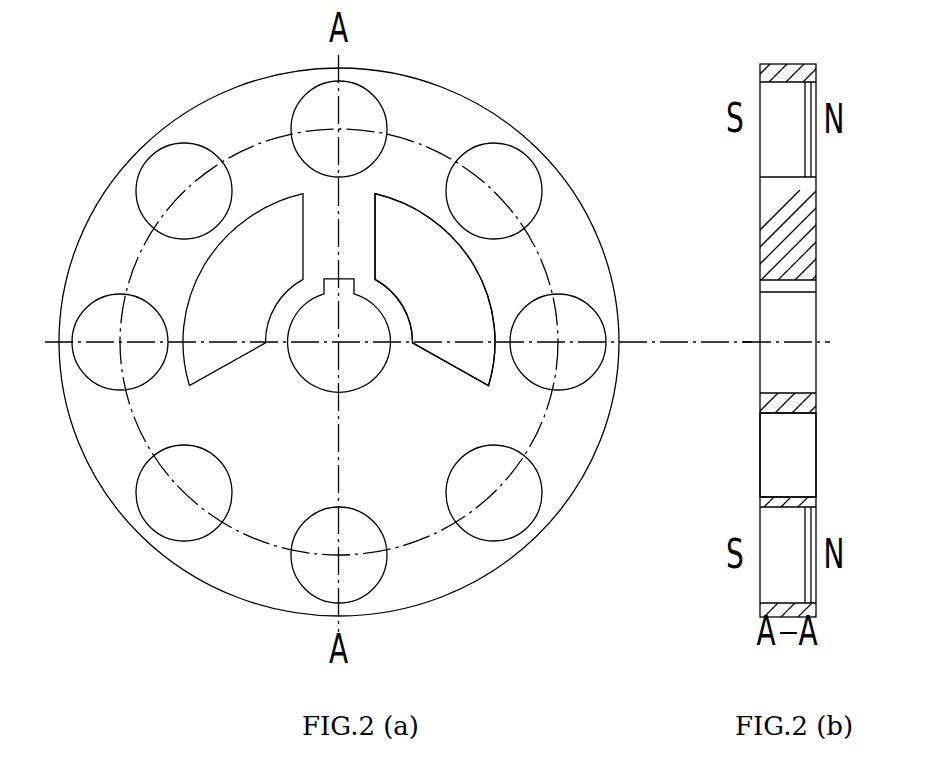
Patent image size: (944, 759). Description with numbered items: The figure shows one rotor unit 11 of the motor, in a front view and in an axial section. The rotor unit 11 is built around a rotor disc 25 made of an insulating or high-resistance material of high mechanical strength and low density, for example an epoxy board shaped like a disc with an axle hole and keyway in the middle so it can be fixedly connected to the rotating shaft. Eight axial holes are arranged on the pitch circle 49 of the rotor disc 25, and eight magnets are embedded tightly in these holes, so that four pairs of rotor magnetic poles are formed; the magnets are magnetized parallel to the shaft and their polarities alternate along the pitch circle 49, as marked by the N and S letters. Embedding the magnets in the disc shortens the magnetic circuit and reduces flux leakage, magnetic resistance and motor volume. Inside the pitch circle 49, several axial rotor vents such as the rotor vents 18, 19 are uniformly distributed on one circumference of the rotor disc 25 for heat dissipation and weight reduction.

The rotor unit 11 is at (510, 572).
The rotor vent 18 is at (440, 285).
The rotor vent 19 is at (228, 290).
The rotor disc 25 is at (407, 163).
The pitch circle 49 is at (538, 425).